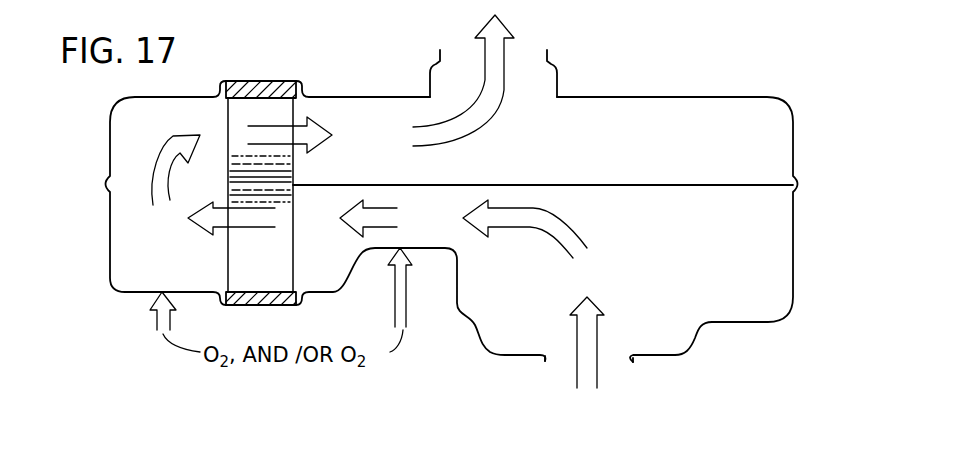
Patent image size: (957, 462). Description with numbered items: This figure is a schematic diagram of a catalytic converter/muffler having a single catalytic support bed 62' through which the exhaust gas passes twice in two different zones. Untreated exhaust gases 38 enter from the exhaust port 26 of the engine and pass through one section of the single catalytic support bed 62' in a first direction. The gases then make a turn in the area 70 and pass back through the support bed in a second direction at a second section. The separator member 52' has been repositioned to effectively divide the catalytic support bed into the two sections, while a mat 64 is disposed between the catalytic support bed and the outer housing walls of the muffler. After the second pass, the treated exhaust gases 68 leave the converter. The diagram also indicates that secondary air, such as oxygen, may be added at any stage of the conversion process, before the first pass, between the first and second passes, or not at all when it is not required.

The exhaust port 26 is at (617, 370).
The untreated exhaust gases 38 is at (592, 337).
The separator member 52' is at (543, 162).
The single catalytic support bed 62' is at (307, 175).
The mat 64 is at (270, 80).
The treated exhaust gases 68 is at (498, 52).
The area 70 is at (165, 273).